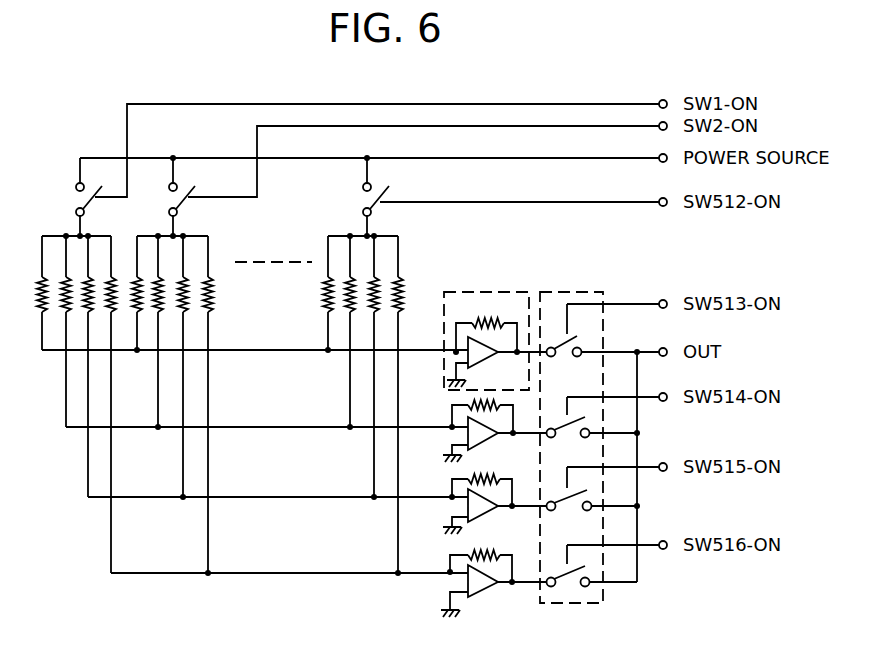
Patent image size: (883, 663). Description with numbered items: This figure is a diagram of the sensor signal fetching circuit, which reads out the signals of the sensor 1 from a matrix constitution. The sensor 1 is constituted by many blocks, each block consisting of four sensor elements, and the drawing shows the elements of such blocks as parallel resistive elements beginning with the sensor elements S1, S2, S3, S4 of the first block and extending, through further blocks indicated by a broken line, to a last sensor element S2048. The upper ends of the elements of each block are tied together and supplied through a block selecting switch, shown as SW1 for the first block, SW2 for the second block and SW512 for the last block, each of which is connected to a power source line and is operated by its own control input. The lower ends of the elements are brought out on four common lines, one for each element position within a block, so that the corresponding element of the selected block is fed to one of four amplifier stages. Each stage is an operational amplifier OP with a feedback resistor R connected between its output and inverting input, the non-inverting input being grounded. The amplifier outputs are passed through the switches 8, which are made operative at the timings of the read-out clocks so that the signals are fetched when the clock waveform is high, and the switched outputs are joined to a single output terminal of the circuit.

The sensor 1 is at (29, 293).
The switches 8 is at (608, 281).
The power switch SW1 is at (100, 197).
The power switch SW2 is at (193, 195).
The power switch SW512 is at (399, 195).
The sensor element S1 is at (28, 293).
The sensor element S2 is at (57, 331).
The sensor element S3 is at (79, 366).
The sensor element S4 is at (103, 404).
The sensor resistor S2048 is at (424, 404).
The feedback resistor R is at (486, 326).
The operational amplifier OP is at (492, 359).